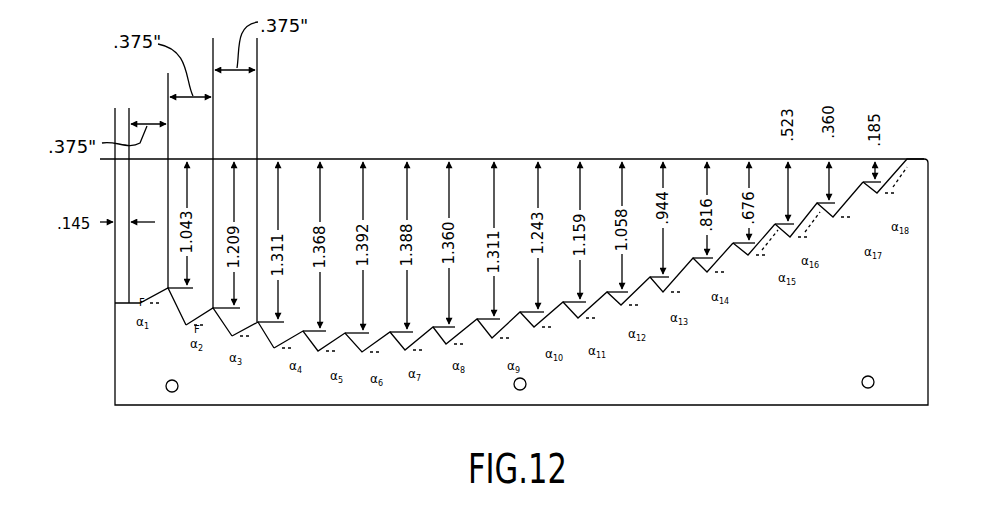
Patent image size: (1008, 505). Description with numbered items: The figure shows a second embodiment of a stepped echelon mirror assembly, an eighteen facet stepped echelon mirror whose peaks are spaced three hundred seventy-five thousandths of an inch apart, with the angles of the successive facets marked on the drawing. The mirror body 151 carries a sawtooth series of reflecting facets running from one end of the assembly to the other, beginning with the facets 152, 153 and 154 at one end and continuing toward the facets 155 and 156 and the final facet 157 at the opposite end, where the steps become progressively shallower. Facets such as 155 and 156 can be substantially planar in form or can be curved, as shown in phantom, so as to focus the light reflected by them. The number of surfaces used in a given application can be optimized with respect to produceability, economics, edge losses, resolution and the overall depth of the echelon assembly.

The cam plate body 151 is at (108, 358).
The first tooth 152 is at (143, 303).
The second tooth 153 is at (208, 329).
The third tooth 154 is at (250, 337).
The facet 155 is at (756, 250).
The facet 156 is at (848, 206).
The last tooth 157 is at (895, 188).